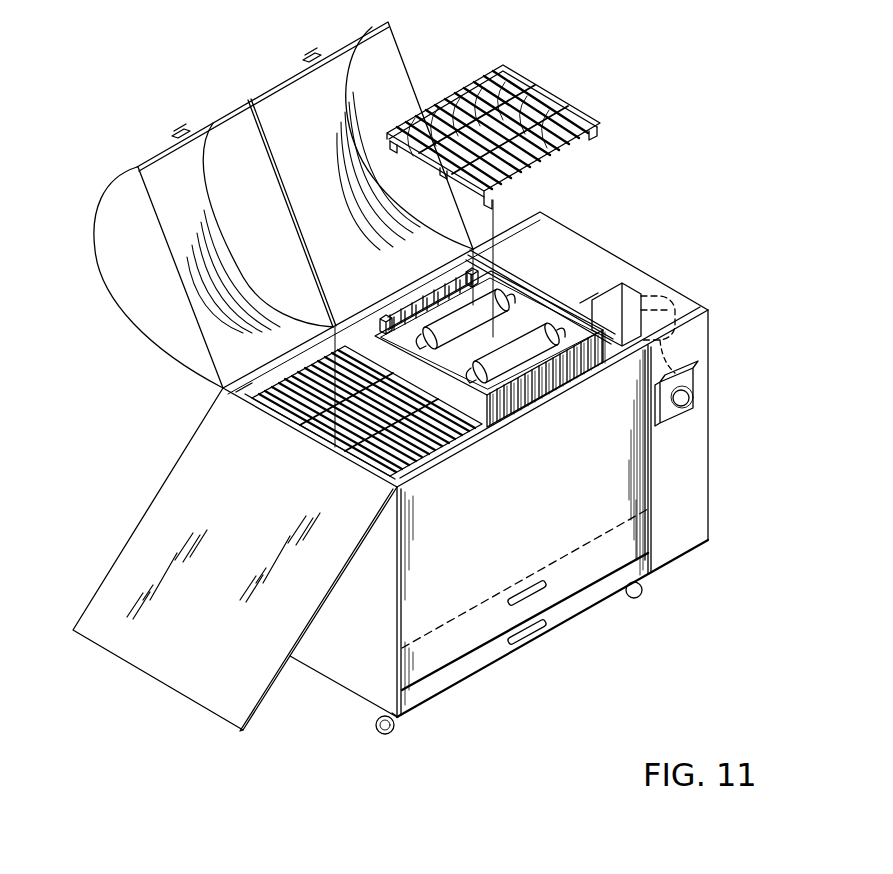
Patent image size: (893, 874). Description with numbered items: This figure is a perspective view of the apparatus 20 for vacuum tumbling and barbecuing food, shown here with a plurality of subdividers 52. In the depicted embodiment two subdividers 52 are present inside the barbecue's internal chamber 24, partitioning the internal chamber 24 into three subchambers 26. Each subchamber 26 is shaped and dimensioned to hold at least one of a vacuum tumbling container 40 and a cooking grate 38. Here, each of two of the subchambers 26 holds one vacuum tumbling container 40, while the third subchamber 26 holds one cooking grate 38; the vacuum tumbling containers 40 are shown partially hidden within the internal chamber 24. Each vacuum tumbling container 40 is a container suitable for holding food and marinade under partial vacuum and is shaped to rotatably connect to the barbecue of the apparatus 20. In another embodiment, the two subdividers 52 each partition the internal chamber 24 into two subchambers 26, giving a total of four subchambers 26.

The apparatus 20 is at (712, 128).
The internal chamber 24 is at (226, 342).
The subchamber 26 is at (250, 376).
The cooking grate 38 is at (450, 433).
The vacuum tumbling container 40 is at (542, 319).
The subdivider 52 is at (500, 318).